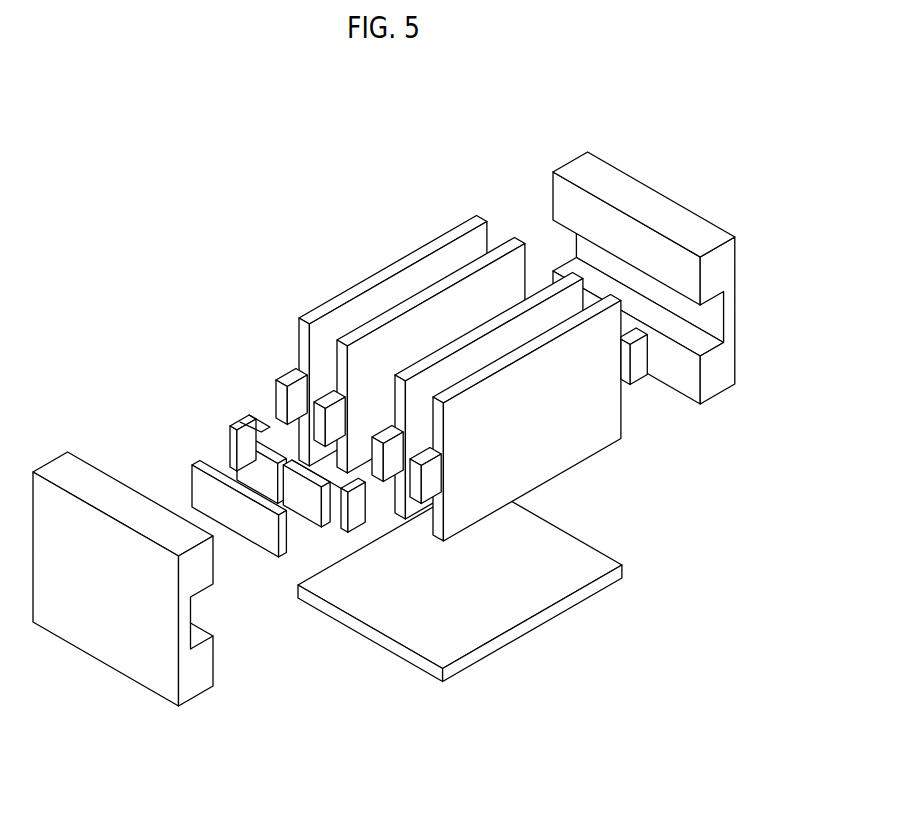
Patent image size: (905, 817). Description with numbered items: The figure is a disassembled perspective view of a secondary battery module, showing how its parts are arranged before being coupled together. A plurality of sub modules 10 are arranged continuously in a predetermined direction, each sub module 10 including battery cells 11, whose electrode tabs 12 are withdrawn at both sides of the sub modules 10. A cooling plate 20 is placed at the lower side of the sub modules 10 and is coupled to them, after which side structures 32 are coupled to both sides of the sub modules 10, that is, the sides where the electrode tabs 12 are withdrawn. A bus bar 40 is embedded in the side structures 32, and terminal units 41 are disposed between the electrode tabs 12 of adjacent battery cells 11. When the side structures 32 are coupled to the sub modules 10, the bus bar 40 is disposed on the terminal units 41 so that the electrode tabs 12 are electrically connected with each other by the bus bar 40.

The sub module 10 is at (442, 347).
The battery cell 11 is at (440, 245).
The electrode tab 12 is at (288, 368).
The cooling plate 20 is at (536, 620).
The side structure 32 is at (673, 222).
The bus bar 40 is at (200, 462).
The terminal unit 41 is at (238, 417).